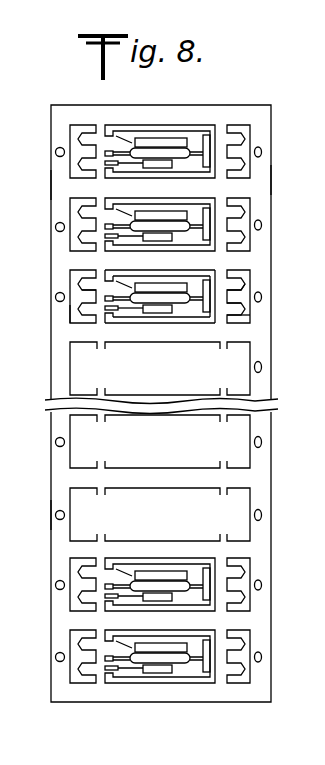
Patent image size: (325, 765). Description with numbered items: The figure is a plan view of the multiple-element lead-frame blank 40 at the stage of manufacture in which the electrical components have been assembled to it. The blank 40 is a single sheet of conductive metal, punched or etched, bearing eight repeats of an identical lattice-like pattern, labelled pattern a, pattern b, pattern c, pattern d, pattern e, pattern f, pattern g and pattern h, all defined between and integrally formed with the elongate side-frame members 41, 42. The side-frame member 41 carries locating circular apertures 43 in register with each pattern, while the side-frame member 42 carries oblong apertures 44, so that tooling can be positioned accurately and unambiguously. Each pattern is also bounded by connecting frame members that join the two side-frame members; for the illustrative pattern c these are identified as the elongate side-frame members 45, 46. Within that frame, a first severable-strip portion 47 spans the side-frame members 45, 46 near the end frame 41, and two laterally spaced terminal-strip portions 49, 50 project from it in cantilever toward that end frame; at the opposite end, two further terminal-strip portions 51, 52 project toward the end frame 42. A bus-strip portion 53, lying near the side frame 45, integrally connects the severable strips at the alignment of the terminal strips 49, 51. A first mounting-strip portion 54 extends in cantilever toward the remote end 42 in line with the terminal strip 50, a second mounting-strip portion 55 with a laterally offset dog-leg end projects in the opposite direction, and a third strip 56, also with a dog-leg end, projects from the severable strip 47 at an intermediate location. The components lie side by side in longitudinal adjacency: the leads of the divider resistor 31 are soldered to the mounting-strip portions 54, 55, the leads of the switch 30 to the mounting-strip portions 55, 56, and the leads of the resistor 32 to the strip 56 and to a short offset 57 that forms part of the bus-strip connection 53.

The multiple-element lead-frame blank 40 is at (243, 104).
The side-frame member 41 is at (52, 184).
The side-frame member 42 is at (272, 189).
The locating circular apertures 43 is at (56, 516).
The oblong apertures 44 is at (262, 367).
The connecting frame member 45 is at (168, 280).
The connecting frame member 46 is at (240, 290).
The first severable-strip portion 47 is at (97, 293).
The terminal-strip portion 49 is at (72, 282).
The terminal-strip portion 50 is at (72, 312).
The terminal-strip portion 51 is at (236, 297).
The terminal-strip portion 52 is at (250, 315).
The bus-strip portion 53 is at (198, 280).
The first mounting-strip portion 54 is at (113, 323).
The second mounting-strip portion 55 is at (219, 330).
The third severable-strip portion 56 is at (132, 272).
The short offset 57 is at (210, 276).
The switch 30 is at (165, 322).
The divider resistor 31 is at (171, 320).
The resistor 32 is at (134, 318).
The pattern a is at (238, 150).
The pattern b is at (237, 226).
The pattern c is at (238, 296).
The pattern d is at (235, 358).
The pattern e is at (240, 440).
The pattern f is at (235, 507).
The pattern g is at (235, 582).
The pattern h is at (235, 656).